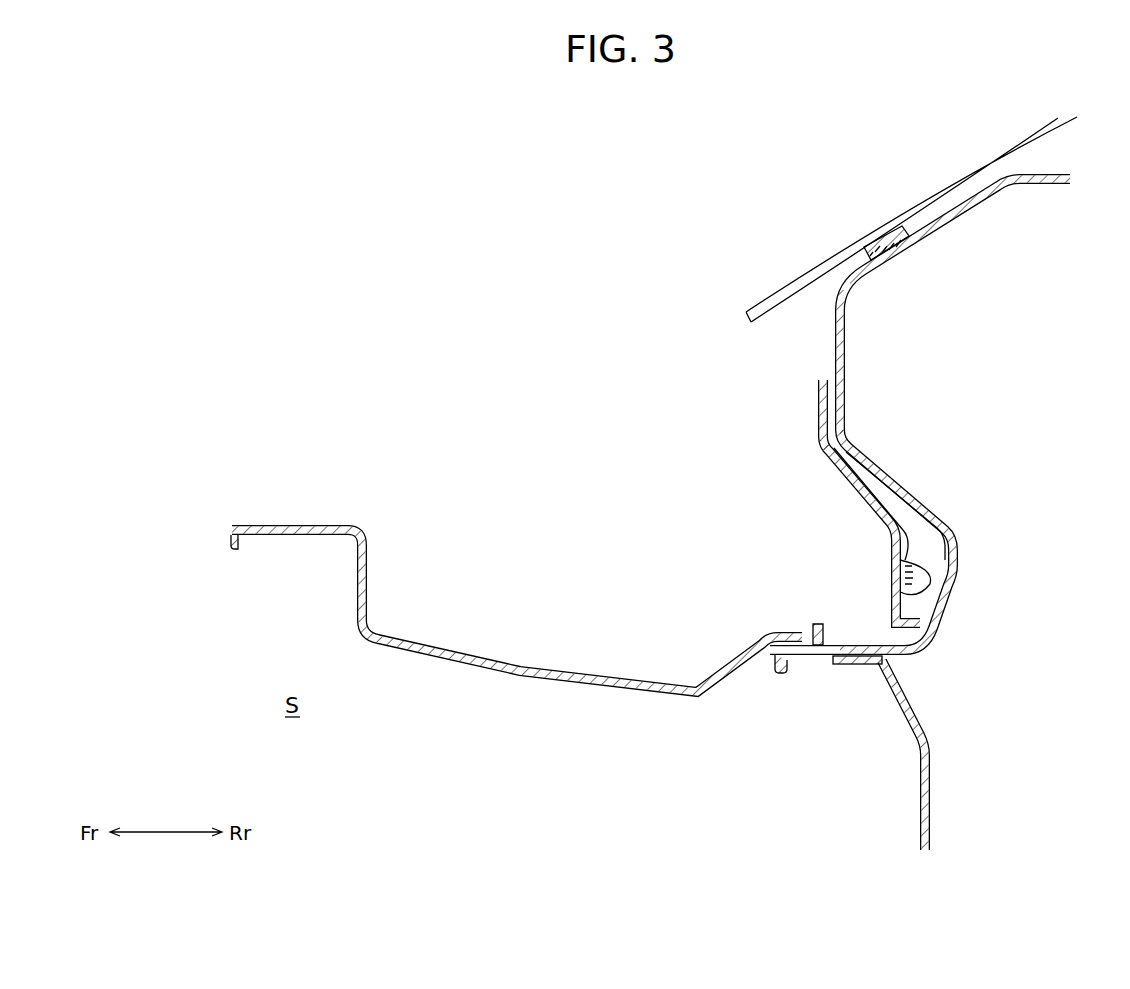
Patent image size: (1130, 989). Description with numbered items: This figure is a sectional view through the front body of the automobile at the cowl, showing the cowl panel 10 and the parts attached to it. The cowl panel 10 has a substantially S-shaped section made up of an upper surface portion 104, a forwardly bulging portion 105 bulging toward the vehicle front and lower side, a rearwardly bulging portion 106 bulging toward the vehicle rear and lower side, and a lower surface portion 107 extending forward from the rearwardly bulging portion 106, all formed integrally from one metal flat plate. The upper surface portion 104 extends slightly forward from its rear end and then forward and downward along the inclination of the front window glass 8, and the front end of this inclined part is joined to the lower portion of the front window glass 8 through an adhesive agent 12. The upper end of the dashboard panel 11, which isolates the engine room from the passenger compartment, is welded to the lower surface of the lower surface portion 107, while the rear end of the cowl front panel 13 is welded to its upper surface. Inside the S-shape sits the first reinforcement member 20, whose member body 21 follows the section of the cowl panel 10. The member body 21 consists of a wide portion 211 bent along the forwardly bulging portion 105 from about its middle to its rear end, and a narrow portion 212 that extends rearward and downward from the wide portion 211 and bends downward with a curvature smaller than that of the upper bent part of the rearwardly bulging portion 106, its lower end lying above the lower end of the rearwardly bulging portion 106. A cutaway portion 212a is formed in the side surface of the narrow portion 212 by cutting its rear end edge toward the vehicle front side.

The front window glass 8 is at (794, 270).
The cowl panel 10 is at (925, 415).
The upper surface portion 104 is at (927, 236).
The forwardly bulging portion 105 is at (846, 347).
The rearwardly bulging portion 106 is at (955, 574).
The lower surface portion 107 is at (817, 658).
The dashboard panel 11 is at (941, 791).
The adhesive agent 12 is at (870, 262).
The cowl front panel 13 is at (473, 640).
The first reinforcement member 20 is at (817, 502).
The member body 21 is at (810, 502).
The wide portion 211 is at (818, 401).
The narrow portion 212 is at (893, 578).
The cutaway portion 212a is at (918, 558).